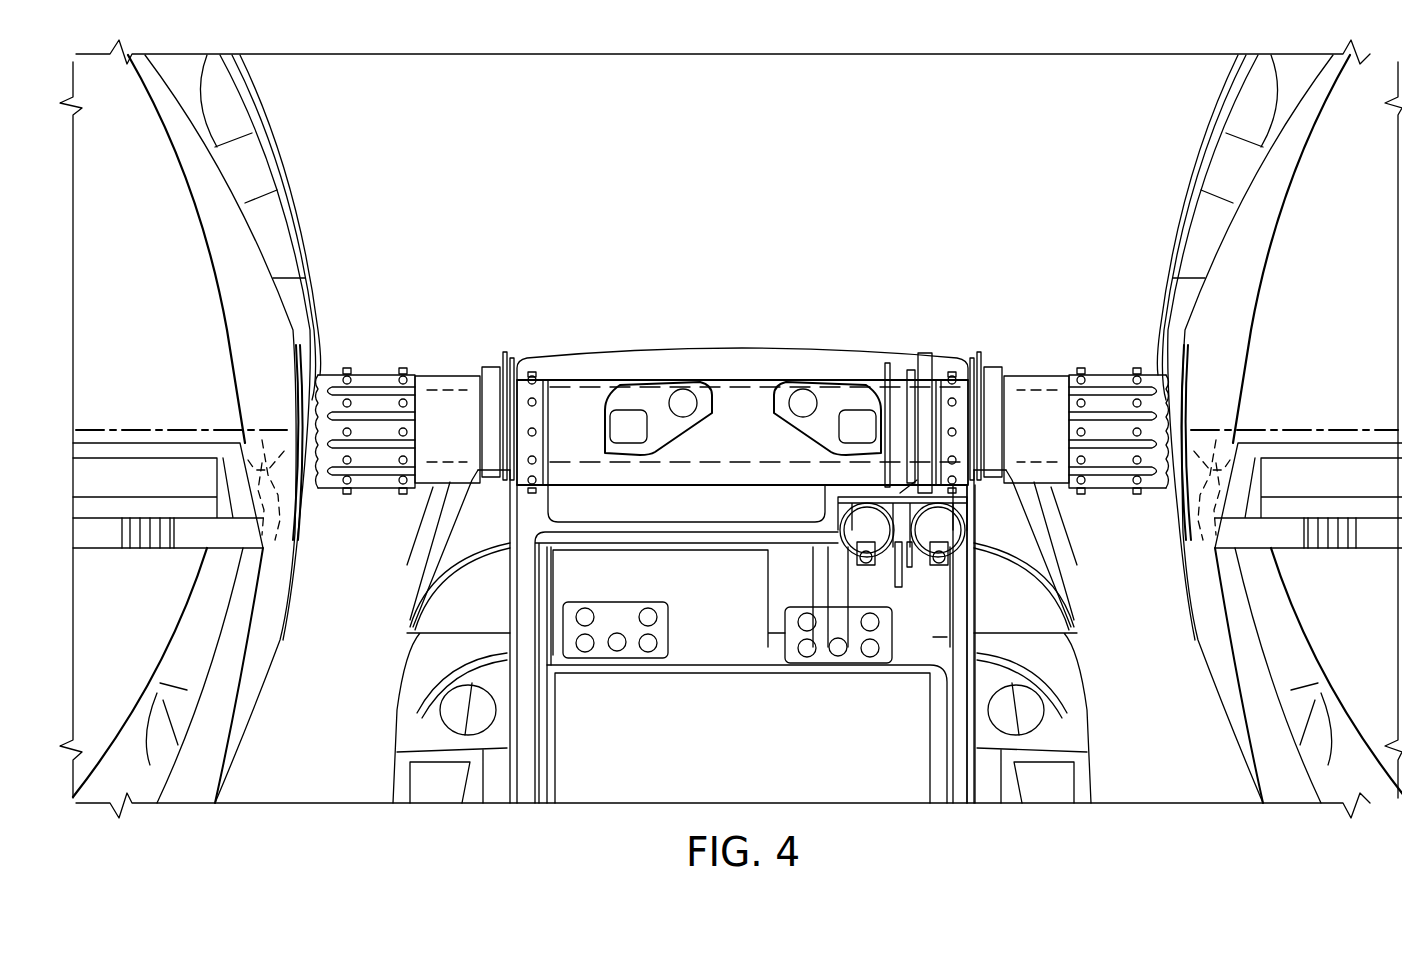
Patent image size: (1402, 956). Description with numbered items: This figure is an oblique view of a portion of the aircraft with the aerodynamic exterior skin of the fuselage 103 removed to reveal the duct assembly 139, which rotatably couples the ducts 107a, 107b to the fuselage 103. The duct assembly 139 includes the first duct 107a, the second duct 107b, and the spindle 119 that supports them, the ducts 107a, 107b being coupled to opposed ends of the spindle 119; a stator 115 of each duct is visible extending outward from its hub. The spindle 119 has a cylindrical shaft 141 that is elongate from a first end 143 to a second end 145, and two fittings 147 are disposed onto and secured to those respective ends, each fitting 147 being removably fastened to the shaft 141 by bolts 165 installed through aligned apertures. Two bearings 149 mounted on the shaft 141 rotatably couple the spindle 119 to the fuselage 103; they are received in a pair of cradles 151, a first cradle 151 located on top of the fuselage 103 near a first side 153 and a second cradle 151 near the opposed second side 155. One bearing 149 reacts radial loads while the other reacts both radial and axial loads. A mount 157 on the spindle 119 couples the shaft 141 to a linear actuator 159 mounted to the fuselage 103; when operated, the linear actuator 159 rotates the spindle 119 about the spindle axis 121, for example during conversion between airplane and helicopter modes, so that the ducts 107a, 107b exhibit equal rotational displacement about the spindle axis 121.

The fuselage 103 is at (583, 350).
The duct 107a is at (1190, 203).
The duct 107b is at (295, 203).
The stator 115 is at (138, 556).
The spindle 119 is at (742, 377).
The spindle axis 121 is at (175, 430).
The duct assembly 139 is at (852, 377).
The shaft 141 is at (603, 385).
The first end 143 is at (1165, 372).
The second end 145 is at (320, 375).
The fitting 147 is at (375, 375).
The bearing 149 is at (497, 358).
The cradle 151 is at (483, 502).
The first side 153 is at (1090, 710).
The second side 155 is at (397, 710).
The mount 157 is at (907, 570).
The linear actuator 159 is at (953, 527).
The bolt 165 is at (405, 432).